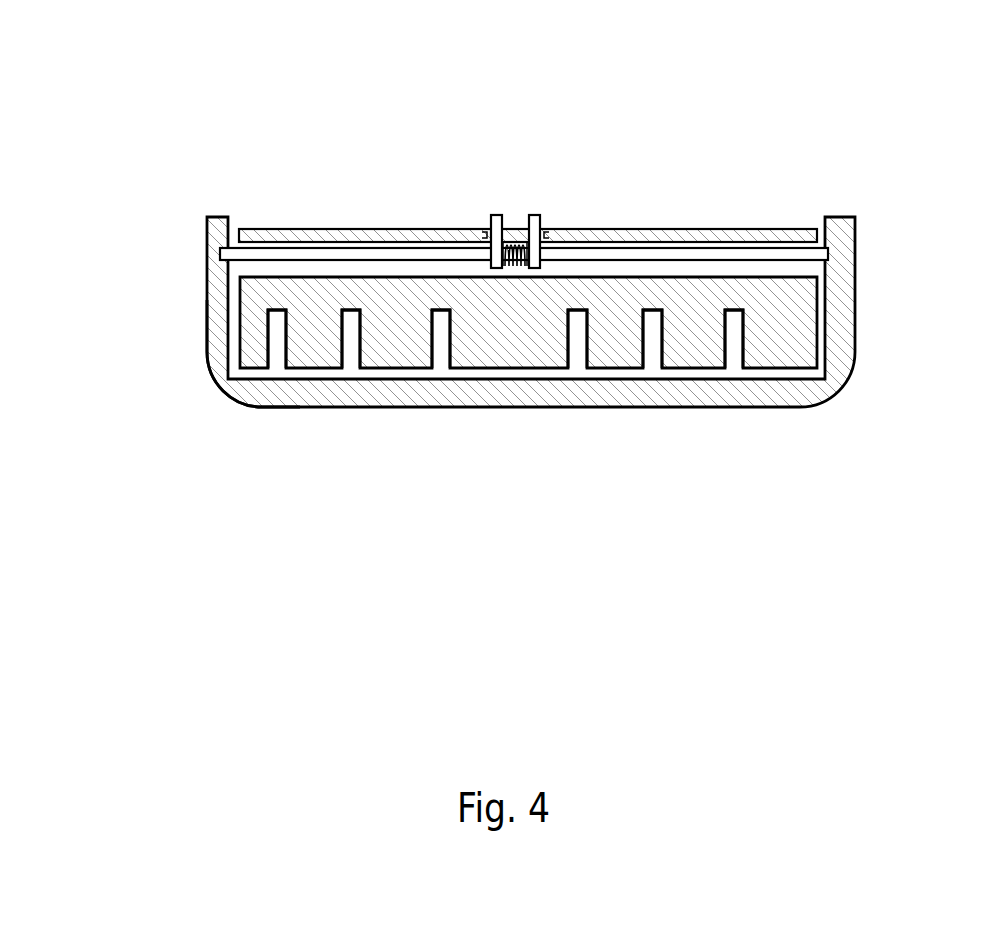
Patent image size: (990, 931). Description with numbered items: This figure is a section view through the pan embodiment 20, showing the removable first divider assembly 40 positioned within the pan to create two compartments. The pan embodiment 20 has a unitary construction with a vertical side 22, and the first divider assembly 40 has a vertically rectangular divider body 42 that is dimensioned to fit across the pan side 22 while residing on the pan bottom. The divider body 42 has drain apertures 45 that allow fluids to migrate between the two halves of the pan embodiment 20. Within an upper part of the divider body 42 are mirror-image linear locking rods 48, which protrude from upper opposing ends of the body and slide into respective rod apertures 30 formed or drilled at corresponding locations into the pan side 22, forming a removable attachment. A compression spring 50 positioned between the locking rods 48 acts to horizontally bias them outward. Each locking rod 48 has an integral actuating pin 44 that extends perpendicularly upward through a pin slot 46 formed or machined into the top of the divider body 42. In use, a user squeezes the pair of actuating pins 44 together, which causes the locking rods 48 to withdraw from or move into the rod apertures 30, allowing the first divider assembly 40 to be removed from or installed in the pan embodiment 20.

The pan embodiment 20 is at (225, 396).
The vertical side 22 is at (208, 235).
The rod apertures 30 is at (220, 260).
The first divider assembly 40 is at (278, 226).
The divider body 42 is at (740, 290).
The actuating pins 44 is at (493, 212).
The drain apertures 45 is at (352, 358).
The pin slot 46 is at (481, 231).
The locking rods 48 is at (400, 253).
The compression spring 50 is at (514, 243).